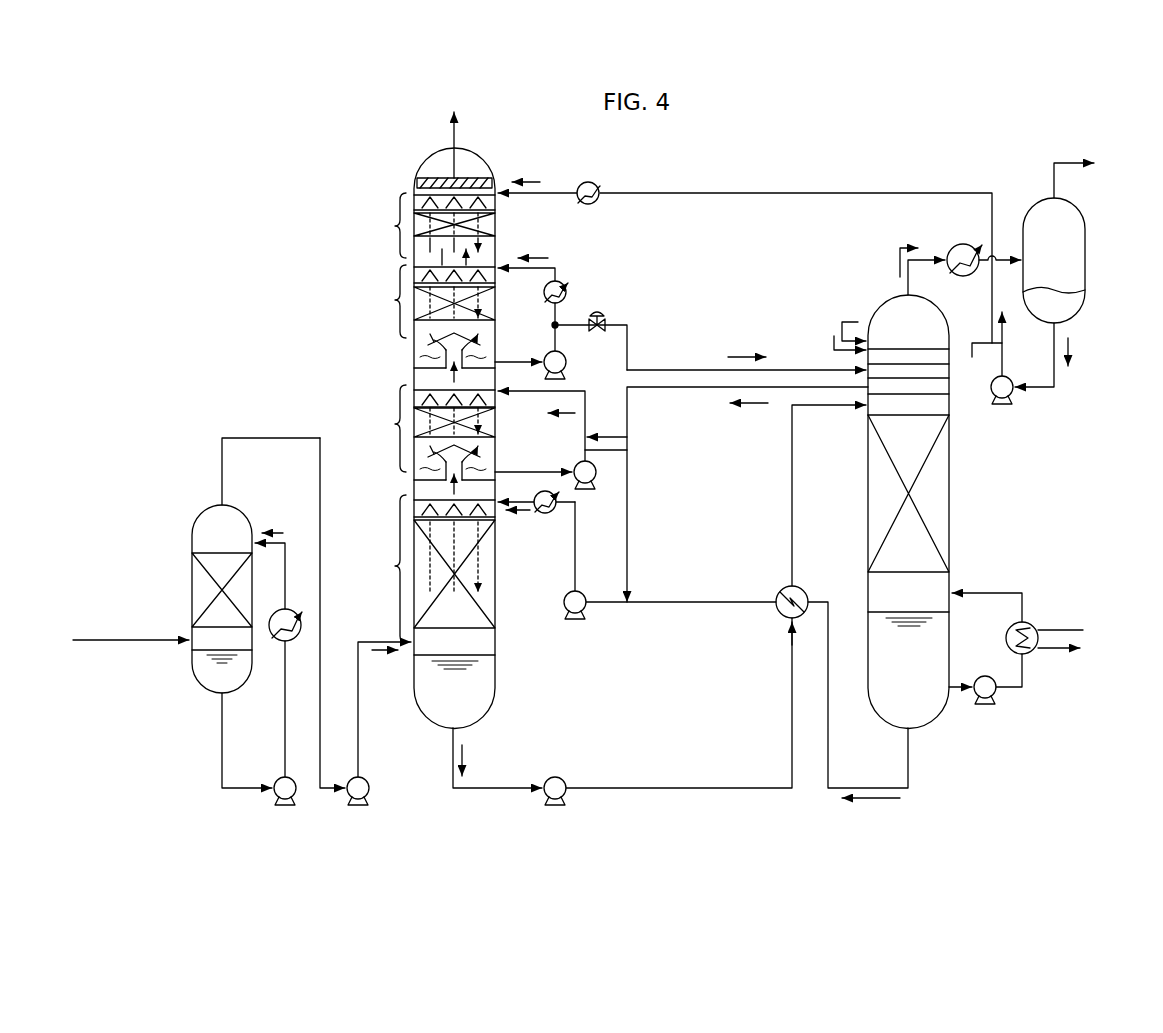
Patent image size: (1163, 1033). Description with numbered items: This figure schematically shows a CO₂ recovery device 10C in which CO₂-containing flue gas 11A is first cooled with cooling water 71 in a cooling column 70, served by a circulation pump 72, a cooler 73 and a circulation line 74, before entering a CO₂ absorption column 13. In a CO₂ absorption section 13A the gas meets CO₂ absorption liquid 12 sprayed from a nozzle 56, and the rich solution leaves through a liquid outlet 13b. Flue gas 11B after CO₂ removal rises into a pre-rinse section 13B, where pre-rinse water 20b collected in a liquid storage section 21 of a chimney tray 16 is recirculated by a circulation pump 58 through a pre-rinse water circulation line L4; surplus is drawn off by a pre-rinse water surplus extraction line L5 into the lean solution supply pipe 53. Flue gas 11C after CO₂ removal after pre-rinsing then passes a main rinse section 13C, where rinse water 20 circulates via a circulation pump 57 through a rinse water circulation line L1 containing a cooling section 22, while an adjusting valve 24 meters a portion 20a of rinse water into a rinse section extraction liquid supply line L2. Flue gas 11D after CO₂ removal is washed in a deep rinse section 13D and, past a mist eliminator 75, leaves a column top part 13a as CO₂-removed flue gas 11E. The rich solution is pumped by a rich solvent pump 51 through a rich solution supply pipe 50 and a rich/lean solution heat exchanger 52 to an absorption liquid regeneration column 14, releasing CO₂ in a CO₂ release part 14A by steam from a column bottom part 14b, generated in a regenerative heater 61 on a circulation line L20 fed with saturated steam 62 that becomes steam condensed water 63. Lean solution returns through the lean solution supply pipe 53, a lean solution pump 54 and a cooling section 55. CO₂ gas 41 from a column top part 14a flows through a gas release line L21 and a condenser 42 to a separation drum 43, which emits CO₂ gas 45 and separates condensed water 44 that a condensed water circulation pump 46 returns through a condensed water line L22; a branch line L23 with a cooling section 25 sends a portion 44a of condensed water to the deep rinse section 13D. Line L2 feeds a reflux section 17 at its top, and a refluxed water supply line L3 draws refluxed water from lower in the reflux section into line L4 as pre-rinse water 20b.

The CO2 recovery device 10C is at (752, 175).
The CO2-containing flue gas 11A is at (370, 672).
The flue gas after CO2 removal 11B is at (438, 480).
The flue gas after CO2 removal after pre-rinsing 11C is at (440, 366).
The flue gas after CO2 removal 11D is at (436, 252).
The CO2-removed flue gas 11E is at (452, 130).
The CO2 absorption liquid 12 is at (488, 600).
The CO2 absorption column 13 is at (397, 186).
The CO2 absorption section 13A is at (400, 582).
The pre-rinse section 13B is at (398, 434).
The main rinse section 13C is at (398, 296).
The deep rinse section 13D is at (398, 232).
The column top part 13a is at (468, 152).
The liquid outlet of first reactor 13b is at (496, 700).
The absorption liquid regeneration column 14 is at (960, 488).
The CO2 release part 14A is at (868, 510).
The column top part 14a is at (882, 298).
The column bottom part 14b is at (928, 722).
The chimney tray 16 is at (448, 336).
The reflux section 17 is at (955, 342).
The rinse water 20 is at (478, 298).
The portion of rinse water 20a is at (748, 352).
The pre-rinse water 20b is at (478, 420).
The liquid storage section 21 is at (480, 352).
The cooling section 22 is at (568, 288).
The adjusting valve 24 is at (604, 317).
The cooling section 25 is at (596, 181).
The CO2 gas 41 is at (900, 246).
The condenser 42 is at (962, 244).
The separation drum 43 is at (1086, 258).
The condensed water 44 is at (838, 332).
The portion of condensed water 44a is at (478, 226).
The CO2 gas 45 is at (1056, 160).
The condensed water circulation pump 46 is at (1012, 366).
The rich solution supply pipe 50 is at (520, 794).
The rich solvent pump 51 is at (544, 795).
The rich/lean solution heat exchanger 52 is at (775, 618).
The lean solution supply pipe 53 is at (828, 788).
The lean solution pump 54 is at (586, 596).
The cooling section 55 is at (558, 508).
The nozzle 56 is at (478, 462).
The circulation pump 57 is at (570, 362).
The circulation pump 58 is at (597, 476).
The regenerative heater 61 is at (1024, 618).
The saturated steam 62 is at (1046, 630).
The steam condensed water 63 is at (1062, 652).
The cooling column 70 is at (186, 508).
The cooling water 71 is at (278, 525).
The circulation pump 72 is at (272, 795).
The cooler 73 is at (275, 650).
The circulation line 74 is at (220, 775).
The mist eliminator 75 is at (438, 180).
The rinse water circulation line L1 is at (563, 270).
The rinse section extraction liquid supply line L2 is at (684, 368).
The refluxed water supply line L3 is at (686, 388).
The pre-rinse water circulation line L4 is at (600, 425).
The pre-rinse water surplus extraction line L5 is at (631, 514).
The circulation line L20 is at (986, 592).
The gas release line L21 is at (1002, 256).
The condensed water line L22 is at (850, 326).
The branch line L23 is at (574, 192).